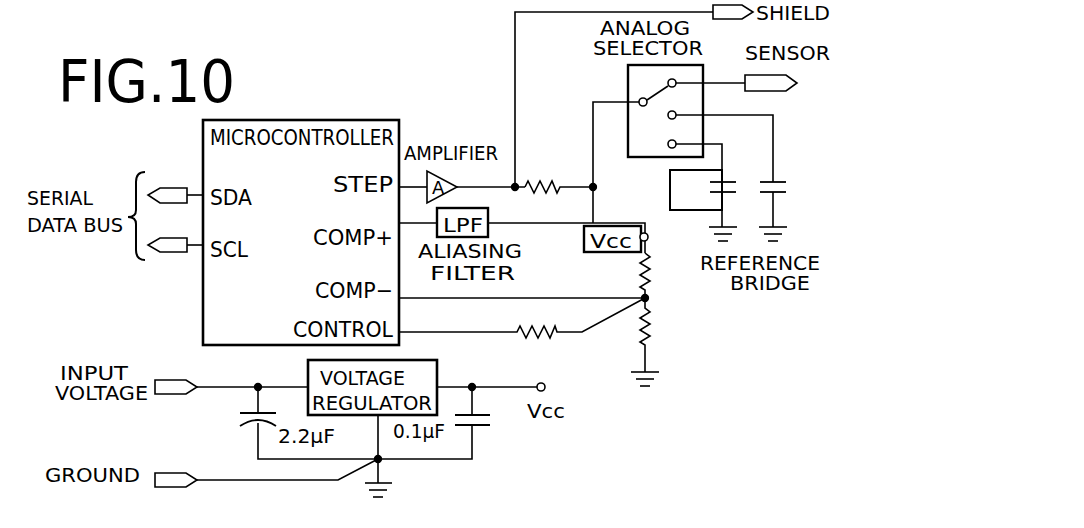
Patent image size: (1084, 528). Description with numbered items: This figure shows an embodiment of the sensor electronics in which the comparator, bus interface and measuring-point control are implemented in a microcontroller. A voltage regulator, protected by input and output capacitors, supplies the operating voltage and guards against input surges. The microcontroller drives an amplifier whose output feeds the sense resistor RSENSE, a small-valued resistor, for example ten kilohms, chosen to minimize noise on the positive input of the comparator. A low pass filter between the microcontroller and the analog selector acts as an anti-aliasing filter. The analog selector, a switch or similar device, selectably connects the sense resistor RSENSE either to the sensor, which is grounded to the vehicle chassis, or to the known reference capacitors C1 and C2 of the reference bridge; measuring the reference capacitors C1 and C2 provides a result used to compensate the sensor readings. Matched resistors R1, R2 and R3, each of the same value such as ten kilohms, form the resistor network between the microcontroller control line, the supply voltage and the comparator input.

The reference capacitor C1 is at (703, 198).
The reference capacitor C2 is at (791, 203).
The resistor R1 is at (522, 334).
The resistor R2 is at (664, 335).
The resistor R3 is at (662, 275).
The sense resistor RSENSE is at (549, 199).